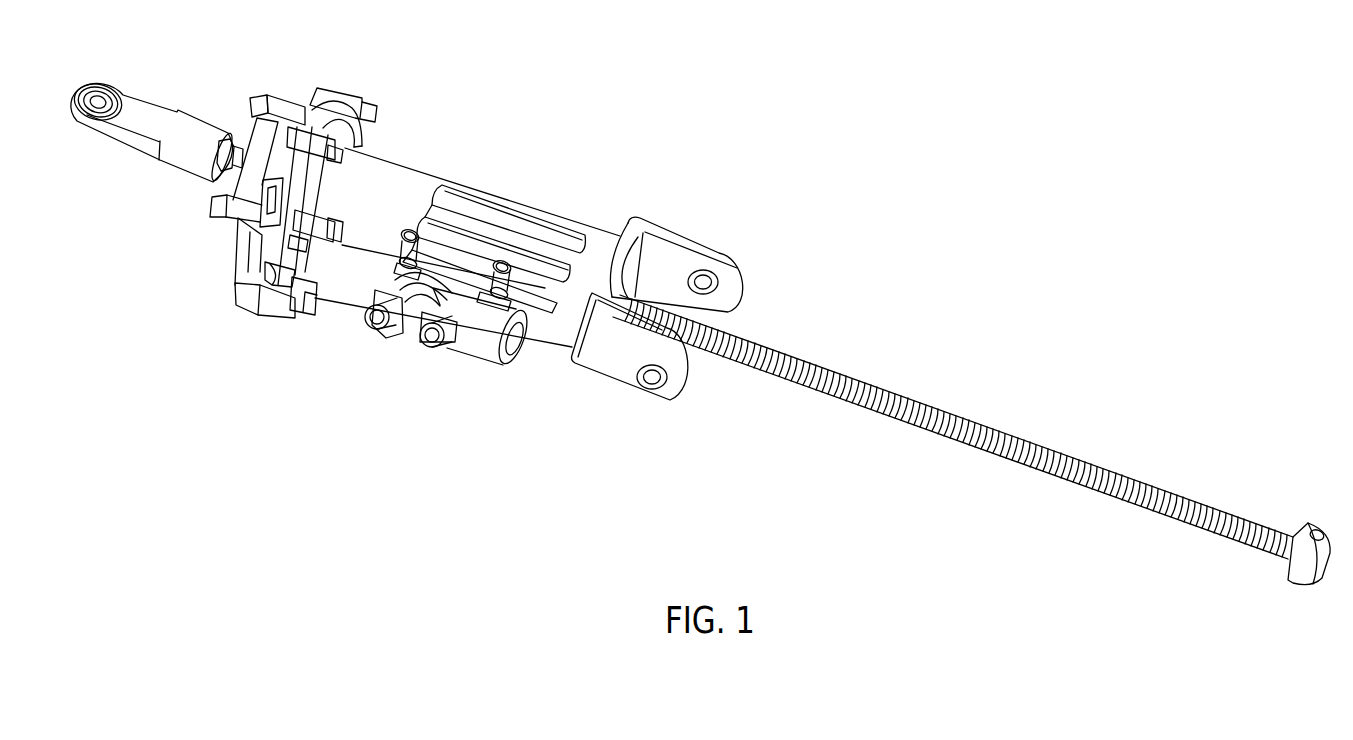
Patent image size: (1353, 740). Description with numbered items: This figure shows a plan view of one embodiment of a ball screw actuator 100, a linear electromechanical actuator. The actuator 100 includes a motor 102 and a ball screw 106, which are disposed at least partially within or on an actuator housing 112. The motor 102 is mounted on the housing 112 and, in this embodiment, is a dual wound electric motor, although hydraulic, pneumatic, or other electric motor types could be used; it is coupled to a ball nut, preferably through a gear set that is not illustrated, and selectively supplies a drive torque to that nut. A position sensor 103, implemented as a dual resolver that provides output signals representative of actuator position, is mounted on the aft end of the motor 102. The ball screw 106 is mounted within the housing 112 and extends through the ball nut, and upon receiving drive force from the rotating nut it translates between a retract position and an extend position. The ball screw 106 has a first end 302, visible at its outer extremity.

The ball screw actuator 100 is at (805, 192).
The motor 102 is at (343, 303).
The position sensor 103 is at (474, 346).
The ball screw 106 is at (974, 406).
The actuator housing 112 is at (523, 189).
The first end 302 is at (1328, 558).